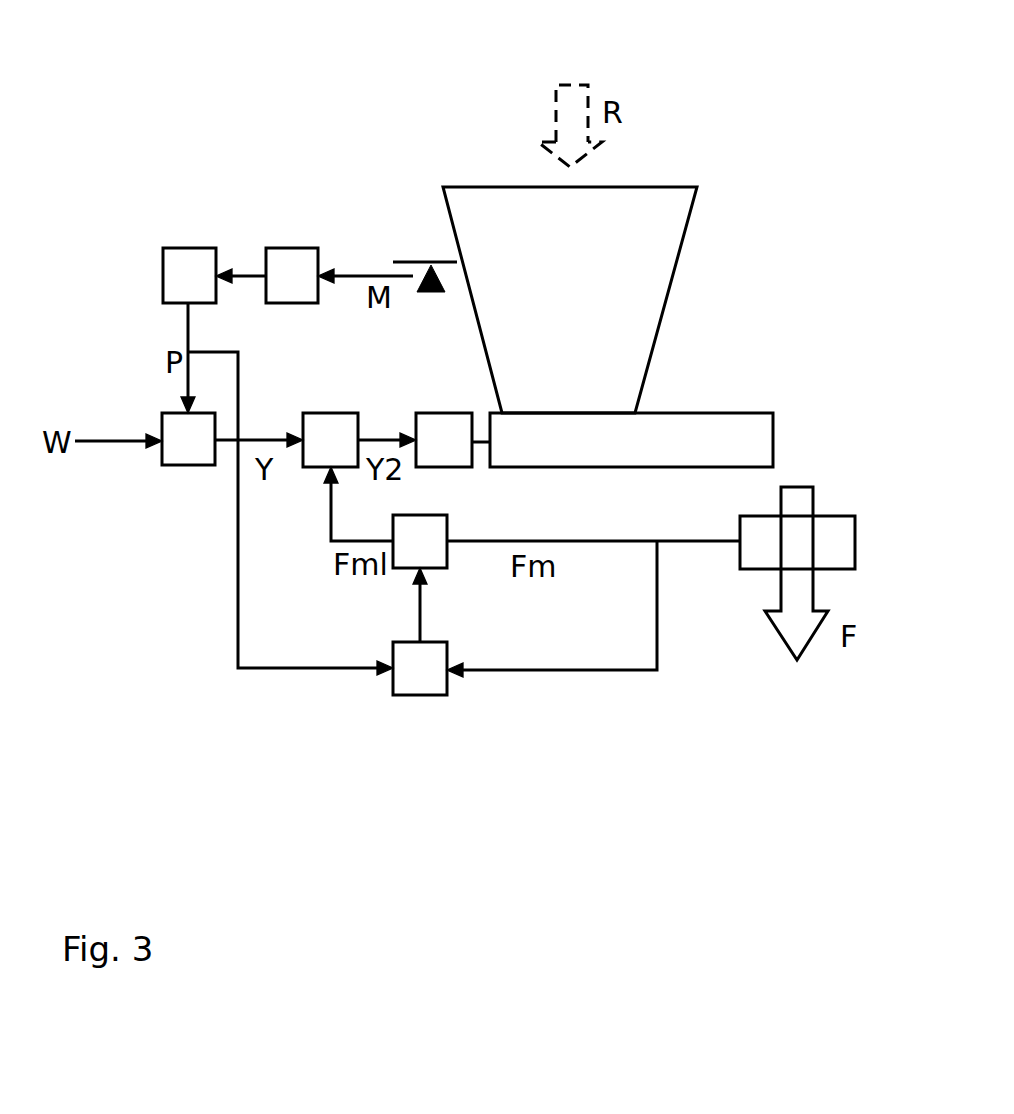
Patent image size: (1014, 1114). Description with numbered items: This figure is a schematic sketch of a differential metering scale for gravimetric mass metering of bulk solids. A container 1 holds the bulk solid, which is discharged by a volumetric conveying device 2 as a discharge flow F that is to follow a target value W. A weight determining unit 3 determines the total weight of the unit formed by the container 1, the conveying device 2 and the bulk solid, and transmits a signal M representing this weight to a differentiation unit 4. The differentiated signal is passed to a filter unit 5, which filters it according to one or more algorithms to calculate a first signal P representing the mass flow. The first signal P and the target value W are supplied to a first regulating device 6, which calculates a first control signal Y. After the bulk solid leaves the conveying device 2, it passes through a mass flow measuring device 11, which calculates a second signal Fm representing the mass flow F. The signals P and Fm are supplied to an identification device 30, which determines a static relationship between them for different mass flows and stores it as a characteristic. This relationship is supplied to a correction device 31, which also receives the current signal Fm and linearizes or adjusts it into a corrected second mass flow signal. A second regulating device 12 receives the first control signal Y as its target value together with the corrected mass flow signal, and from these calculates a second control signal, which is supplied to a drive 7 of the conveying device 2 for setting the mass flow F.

The container 1 is at (621, 259).
The conveying device 2 is at (727, 432).
The weight determining unit 3 is at (421, 258).
The differentiation unit 4 is at (294, 268).
The filter unit 5 is at (188, 268).
The first regulating device 6 is at (188, 445).
The drive 7 is at (433, 430).
The mass flow measuring device 11 is at (832, 535).
The second regulating device 12 is at (326, 446).
The identification device 30 is at (417, 677).
The correction device 31 is at (417, 550).